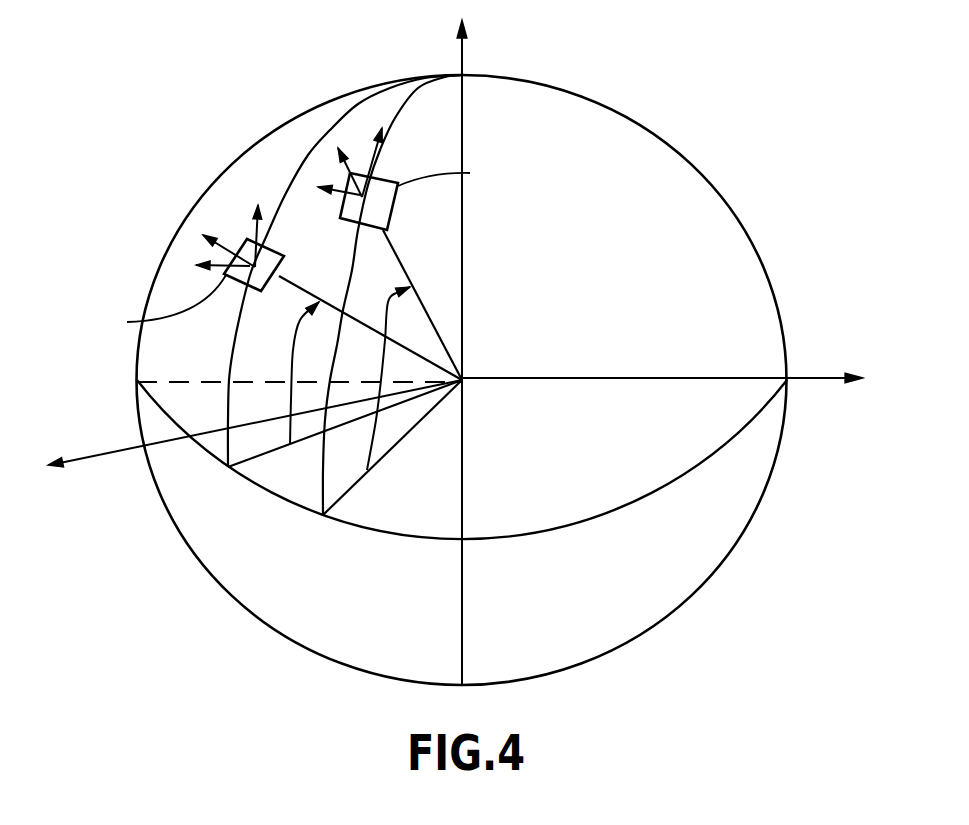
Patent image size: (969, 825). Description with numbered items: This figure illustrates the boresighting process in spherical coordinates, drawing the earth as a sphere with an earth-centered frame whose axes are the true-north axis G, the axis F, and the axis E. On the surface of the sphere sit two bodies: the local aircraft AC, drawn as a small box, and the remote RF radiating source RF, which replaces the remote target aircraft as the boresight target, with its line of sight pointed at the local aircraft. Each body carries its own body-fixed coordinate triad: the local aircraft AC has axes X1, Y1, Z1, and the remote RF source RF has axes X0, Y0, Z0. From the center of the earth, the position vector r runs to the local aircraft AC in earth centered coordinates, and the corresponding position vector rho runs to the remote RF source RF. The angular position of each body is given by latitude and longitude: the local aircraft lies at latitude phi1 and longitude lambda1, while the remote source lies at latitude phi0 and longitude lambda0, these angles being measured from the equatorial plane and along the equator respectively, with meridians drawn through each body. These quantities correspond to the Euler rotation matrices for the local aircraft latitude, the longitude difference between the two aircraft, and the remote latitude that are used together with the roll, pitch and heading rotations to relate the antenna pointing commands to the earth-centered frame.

The true north axis G is at (527, 352).
The F axis F is at (662, 357).
The E axis E is at (255, 445).
The remote RF source X axis X0 is at (378, 150).
The remote RF source Y axis Y0 is at (328, 201).
The remote RF source Z axis Z0 is at (339, 172).
The local aircraft X axis X1 is at (261, 221).
The local aircraft Y axis Y1 is at (212, 251).
The local aircraft Z axis Z1 is at (229, 236).
The position vector of the aircraft r is at (370, 328).
The position vector of the target rho is at (422, 305).
The remote RF source latitude phi0 is at (381, 376).
The local aircraft latitude phi1 is at (293, 373).
The remote RF source longitude lambda0 is at (295, 527).
The local aircraft longitude lambda1 is at (203, 489).
The RF radiating source RF is at (484, 195).
The local aircraft AC is at (173, 291).